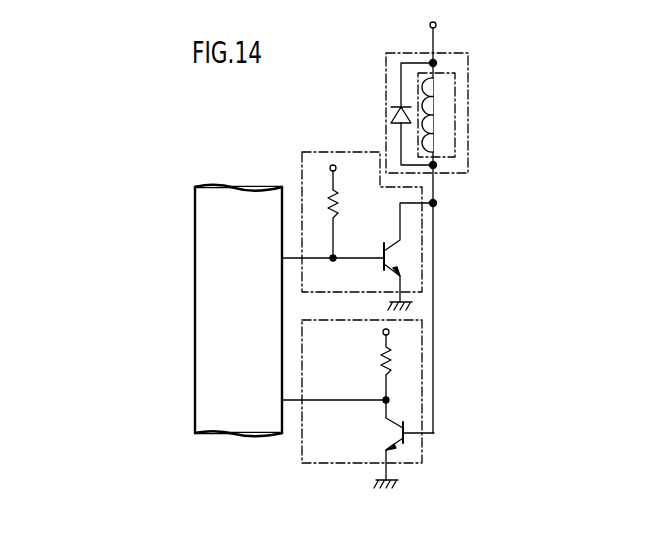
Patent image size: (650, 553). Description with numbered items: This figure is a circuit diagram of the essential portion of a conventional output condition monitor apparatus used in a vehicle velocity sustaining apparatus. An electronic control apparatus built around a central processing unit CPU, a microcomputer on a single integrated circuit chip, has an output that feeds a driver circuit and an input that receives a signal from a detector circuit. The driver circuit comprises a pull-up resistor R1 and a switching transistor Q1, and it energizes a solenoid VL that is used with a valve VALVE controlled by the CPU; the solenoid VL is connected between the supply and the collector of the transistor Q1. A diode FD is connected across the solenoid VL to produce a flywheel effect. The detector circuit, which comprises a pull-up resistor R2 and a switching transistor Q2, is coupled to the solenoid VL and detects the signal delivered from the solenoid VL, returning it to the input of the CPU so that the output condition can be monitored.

The central processing unit CPU is at (259, 340).
The pull-up resistor R1 is at (337, 205).
The pull-up resistor R2 is at (389, 362).
The switching transistor Q1 is at (395, 270).
The switching transistor Q2 is at (392, 432).
The valve VALVE is at (468, 150).
The solenoid VL is at (447, 98).
The diode FD is at (395, 108).